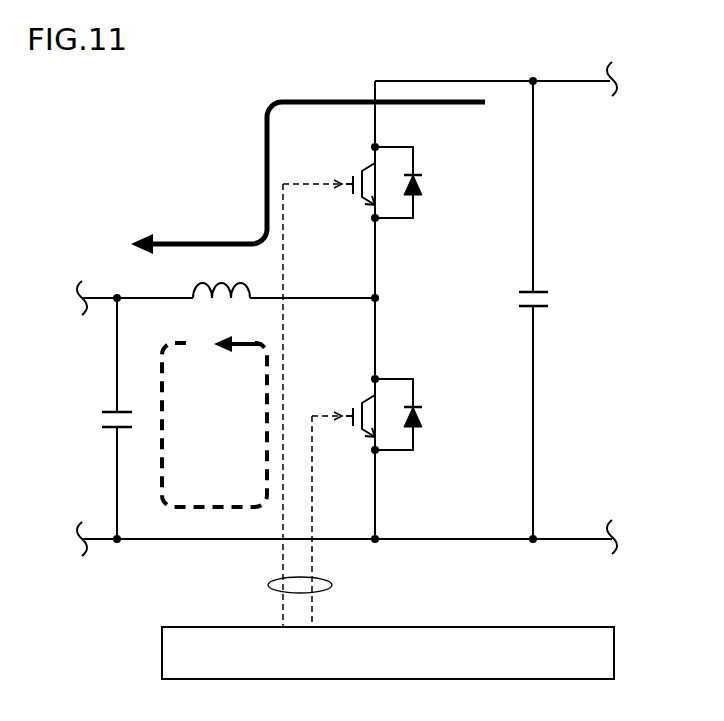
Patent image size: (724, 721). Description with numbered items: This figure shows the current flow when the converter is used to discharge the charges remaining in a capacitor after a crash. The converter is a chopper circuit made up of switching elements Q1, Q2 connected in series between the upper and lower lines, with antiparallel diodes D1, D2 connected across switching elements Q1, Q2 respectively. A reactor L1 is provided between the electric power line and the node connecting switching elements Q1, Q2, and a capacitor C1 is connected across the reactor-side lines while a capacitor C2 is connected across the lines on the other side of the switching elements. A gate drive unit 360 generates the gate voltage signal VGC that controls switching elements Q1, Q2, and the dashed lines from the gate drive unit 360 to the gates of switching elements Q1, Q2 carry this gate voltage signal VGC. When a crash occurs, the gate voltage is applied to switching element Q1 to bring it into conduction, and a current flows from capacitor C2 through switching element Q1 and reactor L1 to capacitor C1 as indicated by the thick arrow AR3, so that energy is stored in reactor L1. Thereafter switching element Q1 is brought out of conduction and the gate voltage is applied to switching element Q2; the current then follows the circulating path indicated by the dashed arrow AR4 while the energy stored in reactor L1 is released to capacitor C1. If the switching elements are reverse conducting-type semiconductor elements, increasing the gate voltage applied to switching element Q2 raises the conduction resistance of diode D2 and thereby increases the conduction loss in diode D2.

The switching element Q1 is at (331, 182).
The diode D1 is at (417, 182).
The switching element Q2 is at (345, 414).
The diode D2 is at (417, 414).
The capacitor C1 is at (106, 418).
The capacitor C2 is at (543, 310).
The reactor L1 is at (221, 277).
The arrow AR3 is at (208, 242).
The dashed arrow AR4 is at (196, 507).
The gate voltage signal VGC is at (324, 586).
The gate drive unit 360 is at (614, 652).